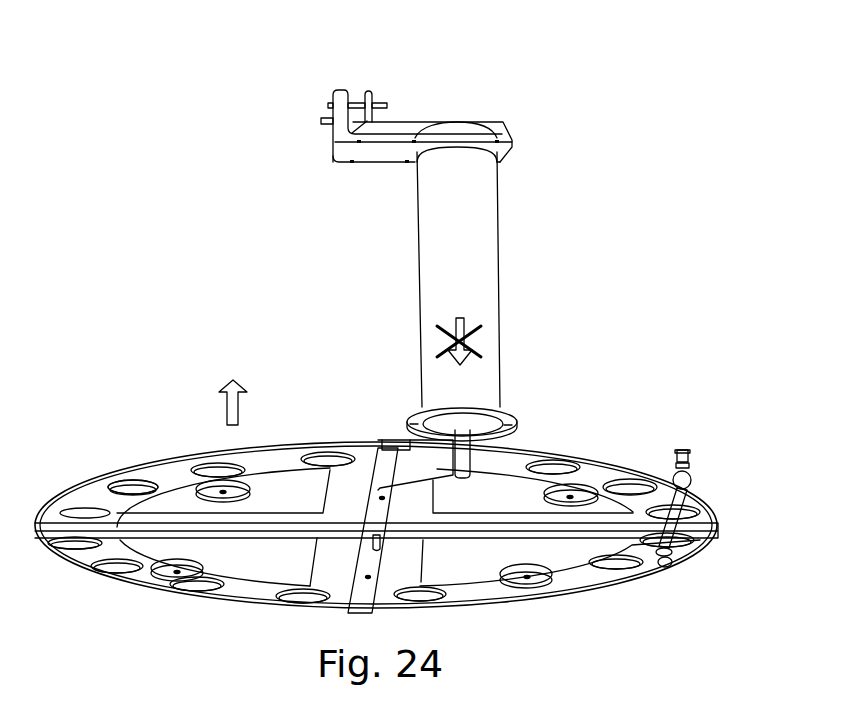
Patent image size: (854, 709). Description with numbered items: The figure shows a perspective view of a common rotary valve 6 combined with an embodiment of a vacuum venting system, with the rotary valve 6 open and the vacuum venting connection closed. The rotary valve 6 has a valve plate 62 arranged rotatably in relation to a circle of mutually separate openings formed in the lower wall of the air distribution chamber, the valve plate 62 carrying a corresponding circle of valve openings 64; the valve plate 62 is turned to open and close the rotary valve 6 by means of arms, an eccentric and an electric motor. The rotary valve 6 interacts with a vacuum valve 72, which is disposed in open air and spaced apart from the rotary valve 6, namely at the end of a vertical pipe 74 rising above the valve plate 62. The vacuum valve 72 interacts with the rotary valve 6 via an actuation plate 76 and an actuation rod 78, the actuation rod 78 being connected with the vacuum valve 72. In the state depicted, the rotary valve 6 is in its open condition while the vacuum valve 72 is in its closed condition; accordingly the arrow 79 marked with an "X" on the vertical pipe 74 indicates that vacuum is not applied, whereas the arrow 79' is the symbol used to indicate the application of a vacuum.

The rotary valve 6 is at (637, 460).
The valve plate 62 is at (267, 462).
The valve openings 64 is at (129, 492).
The vacuum valve 72 is at (500, 127).
The vertical pipe 74 is at (481, 217).
The actuation plate 76 is at (403, 452).
The actuation rod 78 is at (500, 441).
The arrow with an "X" 79 is at (501, 341).
The arrow 79' is at (212, 400).